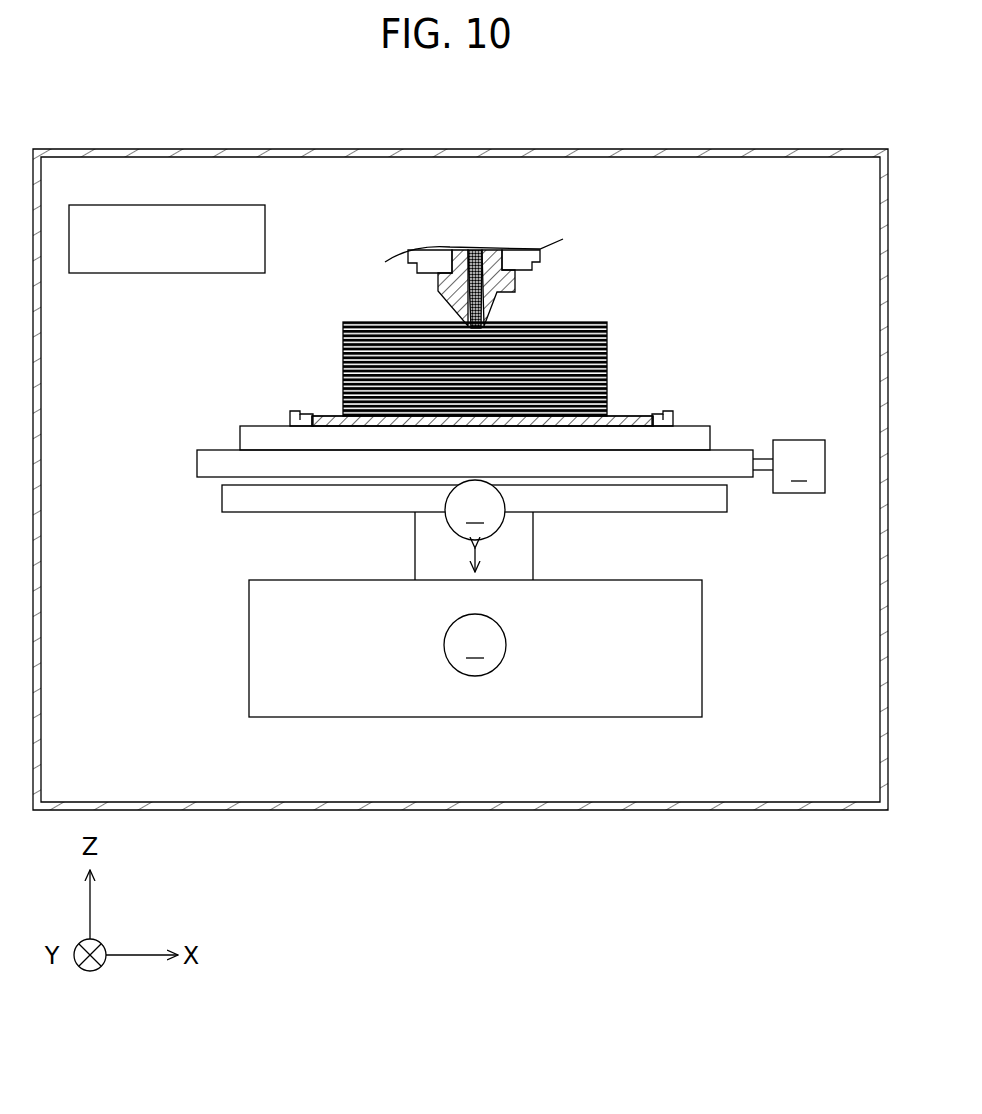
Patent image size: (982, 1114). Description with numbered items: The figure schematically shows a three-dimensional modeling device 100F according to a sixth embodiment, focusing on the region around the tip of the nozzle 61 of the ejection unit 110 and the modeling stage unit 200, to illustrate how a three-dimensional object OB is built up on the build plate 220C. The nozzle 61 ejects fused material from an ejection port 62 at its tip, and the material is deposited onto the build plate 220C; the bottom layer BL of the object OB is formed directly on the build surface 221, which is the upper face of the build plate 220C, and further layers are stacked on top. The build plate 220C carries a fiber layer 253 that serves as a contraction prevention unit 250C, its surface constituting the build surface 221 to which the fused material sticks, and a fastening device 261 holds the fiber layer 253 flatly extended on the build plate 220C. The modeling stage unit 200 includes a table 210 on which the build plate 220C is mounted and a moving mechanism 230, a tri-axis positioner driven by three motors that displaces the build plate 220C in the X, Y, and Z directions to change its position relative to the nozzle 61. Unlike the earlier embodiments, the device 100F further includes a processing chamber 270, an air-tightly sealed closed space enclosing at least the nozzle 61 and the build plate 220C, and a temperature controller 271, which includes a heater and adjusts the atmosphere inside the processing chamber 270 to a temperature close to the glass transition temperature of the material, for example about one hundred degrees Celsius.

The 3D modeling device 100F is at (221, 101).
The processing chamber 270 is at (722, 150).
The temperature controller 271 is at (148, 205).
The ejection unit 110 is at (486, 277).
The nozzle 61 is at (452, 312).
The ejection port 62 is at (470, 322).
The 3D object OB is at (333, 333).
The modeling stage unit 200 is at (471, 495).
The build plate 220C is at (470, 413).
The build surface 221 is at (444, 392).
The contraction prevention unit 250C is at (414, 387).
The fiber layer 253 is at (322, 420).
The bottom layer BL is at (340, 418).
The fastening device 261 is at (292, 412).
The table 210 is at (200, 458).
The moving mechanism 230 is at (744, 572).